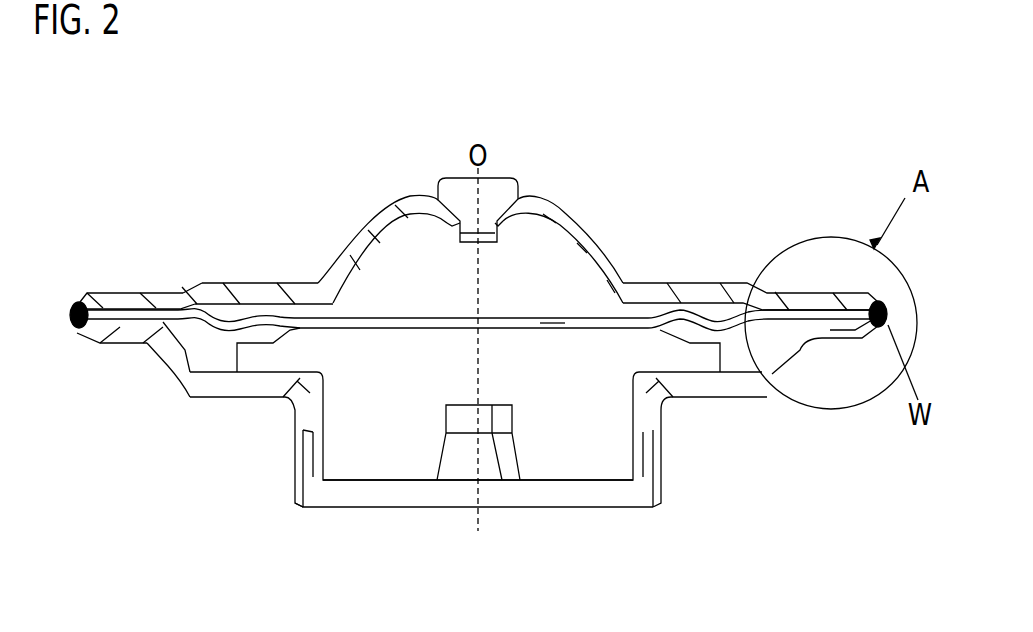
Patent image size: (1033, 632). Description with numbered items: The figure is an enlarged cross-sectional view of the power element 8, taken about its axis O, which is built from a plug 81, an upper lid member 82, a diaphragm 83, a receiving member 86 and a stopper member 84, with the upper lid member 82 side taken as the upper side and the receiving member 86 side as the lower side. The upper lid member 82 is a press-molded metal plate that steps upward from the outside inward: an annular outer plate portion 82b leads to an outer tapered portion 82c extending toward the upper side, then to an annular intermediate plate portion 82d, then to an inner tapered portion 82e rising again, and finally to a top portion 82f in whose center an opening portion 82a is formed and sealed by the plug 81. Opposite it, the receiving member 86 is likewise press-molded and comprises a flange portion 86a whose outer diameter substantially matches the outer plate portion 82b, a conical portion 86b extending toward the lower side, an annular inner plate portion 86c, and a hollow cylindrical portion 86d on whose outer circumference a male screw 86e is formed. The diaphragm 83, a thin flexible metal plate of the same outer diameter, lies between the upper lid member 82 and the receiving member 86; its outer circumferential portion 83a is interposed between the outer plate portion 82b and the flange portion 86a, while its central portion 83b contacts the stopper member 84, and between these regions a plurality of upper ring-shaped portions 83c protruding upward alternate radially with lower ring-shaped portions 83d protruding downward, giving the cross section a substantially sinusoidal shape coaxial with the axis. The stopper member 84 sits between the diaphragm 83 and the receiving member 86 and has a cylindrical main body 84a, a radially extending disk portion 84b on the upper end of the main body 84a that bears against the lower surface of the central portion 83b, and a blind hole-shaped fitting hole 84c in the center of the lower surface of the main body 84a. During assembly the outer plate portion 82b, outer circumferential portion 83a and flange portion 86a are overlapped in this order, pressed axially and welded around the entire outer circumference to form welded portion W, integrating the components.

The power element 8 is at (668, 172).
The plug 81 is at (500, 178).
The upper lid member 82 is at (97, 292).
The opening portion 82a is at (456, 180).
The outer plate portion 82b is at (124, 292).
The outer tapered portion 82c is at (190, 288).
The intermediate plate portion 82d is at (255, 282).
The inner tapered portion 82e is at (367, 240).
The top portion 82f is at (450, 218).
The diaphragm 83 is at (527, 327).
The outer circumferential portion 83a is at (830, 308).
The central portion 83b is at (552, 327).
The upper ring-shaped portion 83c is at (757, 420).
The lower ring-shaped portion 83d is at (768, 333).
The stopper member 84 is at (416, 482).
The main body 84a is at (578, 450).
The disk portion 84b is at (683, 393).
The fitting hole 84c is at (490, 408).
The receiving member 86 is at (306, 497).
The flange portion 86a is at (120, 335).
The conical portion 86b is at (167, 387).
The inner plate portion 86c is at (233, 388).
The hollow cylindrical portion 86d is at (317, 450).
The male screw 86e is at (293, 467).